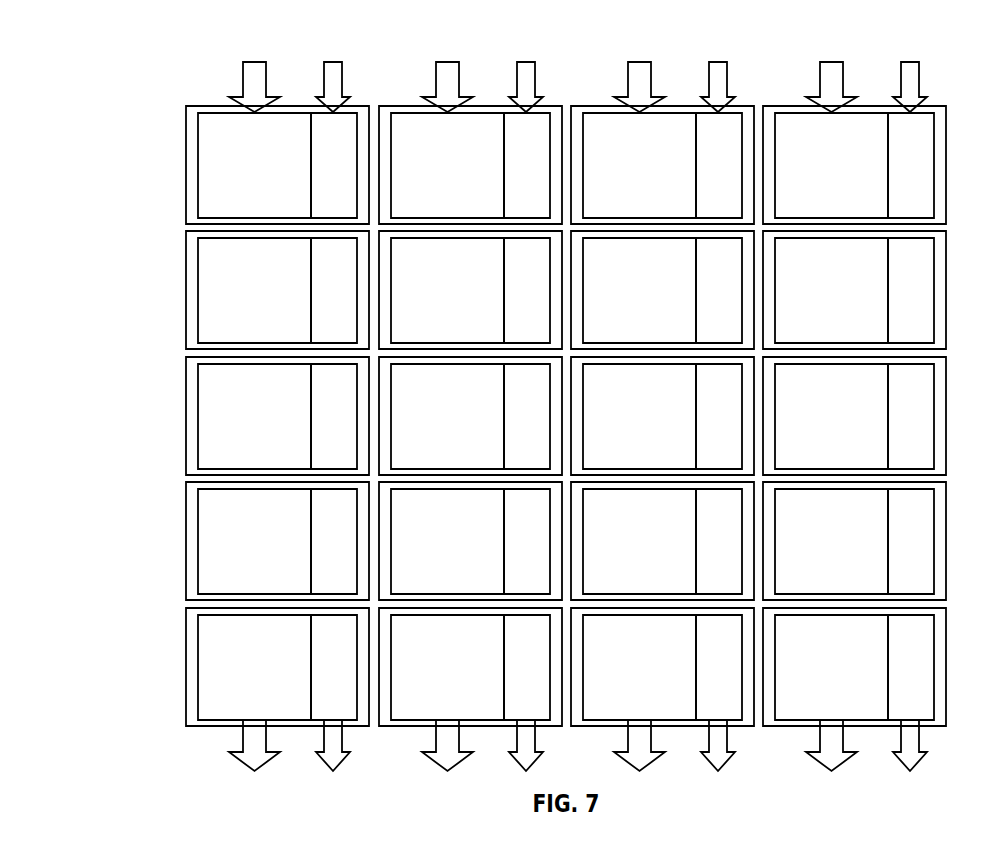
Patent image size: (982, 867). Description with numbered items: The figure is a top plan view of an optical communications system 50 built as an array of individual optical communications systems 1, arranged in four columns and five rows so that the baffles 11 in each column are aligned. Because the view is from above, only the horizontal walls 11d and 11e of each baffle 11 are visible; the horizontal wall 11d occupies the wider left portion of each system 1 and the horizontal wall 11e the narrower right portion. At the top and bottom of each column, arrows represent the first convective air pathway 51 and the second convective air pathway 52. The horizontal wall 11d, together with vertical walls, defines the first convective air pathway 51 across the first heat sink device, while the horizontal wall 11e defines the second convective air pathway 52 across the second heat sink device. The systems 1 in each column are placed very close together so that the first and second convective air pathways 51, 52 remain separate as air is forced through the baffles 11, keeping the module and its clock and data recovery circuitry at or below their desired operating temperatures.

The optical communications system 50 is at (124, 62).
The baffle 11 is at (198, 135).
The optical communications system 1 is at (839, 679).
The horizontal wall 11d is at (238, 127).
The horizontal wall 11e is at (330, 127).
The first convective air pathway 51 is at (255, 62).
The second convective air pathway 52 is at (342, 70).